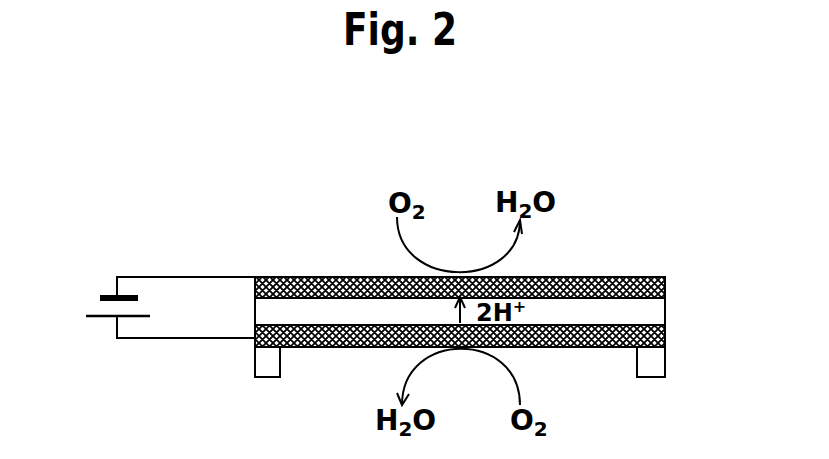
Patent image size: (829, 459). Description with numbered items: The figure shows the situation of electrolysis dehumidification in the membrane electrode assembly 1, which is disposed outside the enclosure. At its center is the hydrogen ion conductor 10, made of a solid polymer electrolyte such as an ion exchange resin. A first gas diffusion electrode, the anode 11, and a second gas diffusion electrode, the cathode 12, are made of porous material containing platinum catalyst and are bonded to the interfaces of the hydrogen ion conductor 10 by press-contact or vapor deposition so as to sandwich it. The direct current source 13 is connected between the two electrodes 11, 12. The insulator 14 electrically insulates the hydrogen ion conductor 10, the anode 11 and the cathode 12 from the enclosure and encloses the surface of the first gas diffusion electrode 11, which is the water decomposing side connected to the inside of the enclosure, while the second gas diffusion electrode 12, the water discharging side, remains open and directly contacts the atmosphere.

The membrane electrode assembly 1 is at (299, 312).
The hydrogen ion conductor 10 is at (657, 312).
The first gas diffusion electrode (anode) 11 is at (665, 332).
The second gas diffusion electrode (cathode) 12 is at (613, 277).
The direct current source 13 is at (105, 290).
The insulator 14 is at (262, 361).